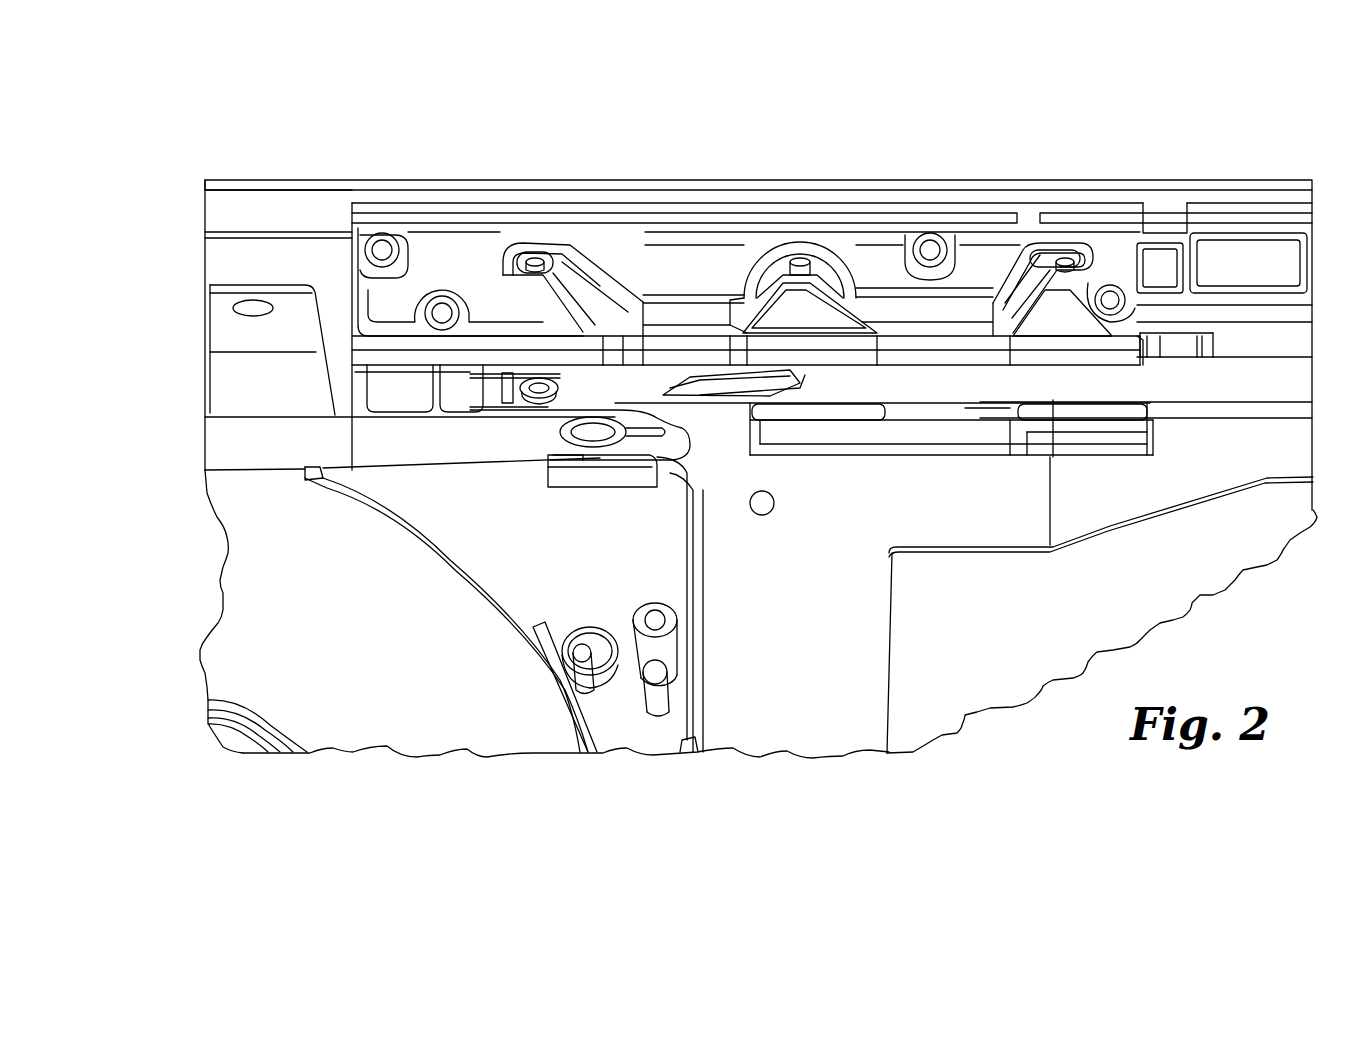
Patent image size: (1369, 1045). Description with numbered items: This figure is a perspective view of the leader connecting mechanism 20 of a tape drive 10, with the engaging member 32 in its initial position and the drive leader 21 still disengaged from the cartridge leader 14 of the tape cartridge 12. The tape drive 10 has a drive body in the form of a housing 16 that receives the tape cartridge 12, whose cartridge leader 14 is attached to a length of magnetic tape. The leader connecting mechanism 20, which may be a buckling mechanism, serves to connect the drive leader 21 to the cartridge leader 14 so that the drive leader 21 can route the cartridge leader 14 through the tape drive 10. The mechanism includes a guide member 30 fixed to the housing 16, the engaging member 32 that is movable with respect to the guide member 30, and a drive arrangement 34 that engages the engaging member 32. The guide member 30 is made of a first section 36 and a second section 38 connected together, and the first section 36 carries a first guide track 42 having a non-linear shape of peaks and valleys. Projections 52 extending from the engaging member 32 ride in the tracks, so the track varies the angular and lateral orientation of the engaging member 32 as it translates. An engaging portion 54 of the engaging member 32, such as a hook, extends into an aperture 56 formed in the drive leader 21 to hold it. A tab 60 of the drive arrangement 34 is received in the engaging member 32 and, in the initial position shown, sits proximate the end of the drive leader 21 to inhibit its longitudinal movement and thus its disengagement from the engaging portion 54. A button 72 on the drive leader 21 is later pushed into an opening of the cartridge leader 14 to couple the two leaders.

The tape drive 10 is at (1125, 150).
The tape cartridge 12 is at (705, 690).
The cartridge leader 14 is at (345, 443).
The housing 16 is at (313, 180).
The leader connecting mechanism 20 is at (340, 355).
The drive leader 21 is at (933, 383).
The guide member 30 is at (648, 200).
The engaging member 32 is at (762, 500).
The drive arrangement 34 is at (258, 213).
The first section 36 is at (1140, 355).
The second section 38 is at (1133, 453).
The first guide track 42 is at (1065, 258).
The projections 52 is at (535, 258).
The engaging portion 54 is at (705, 393).
The aperture 56 is at (802, 380).
The tab 60 is at (510, 403).
The button 72 is at (538, 400).